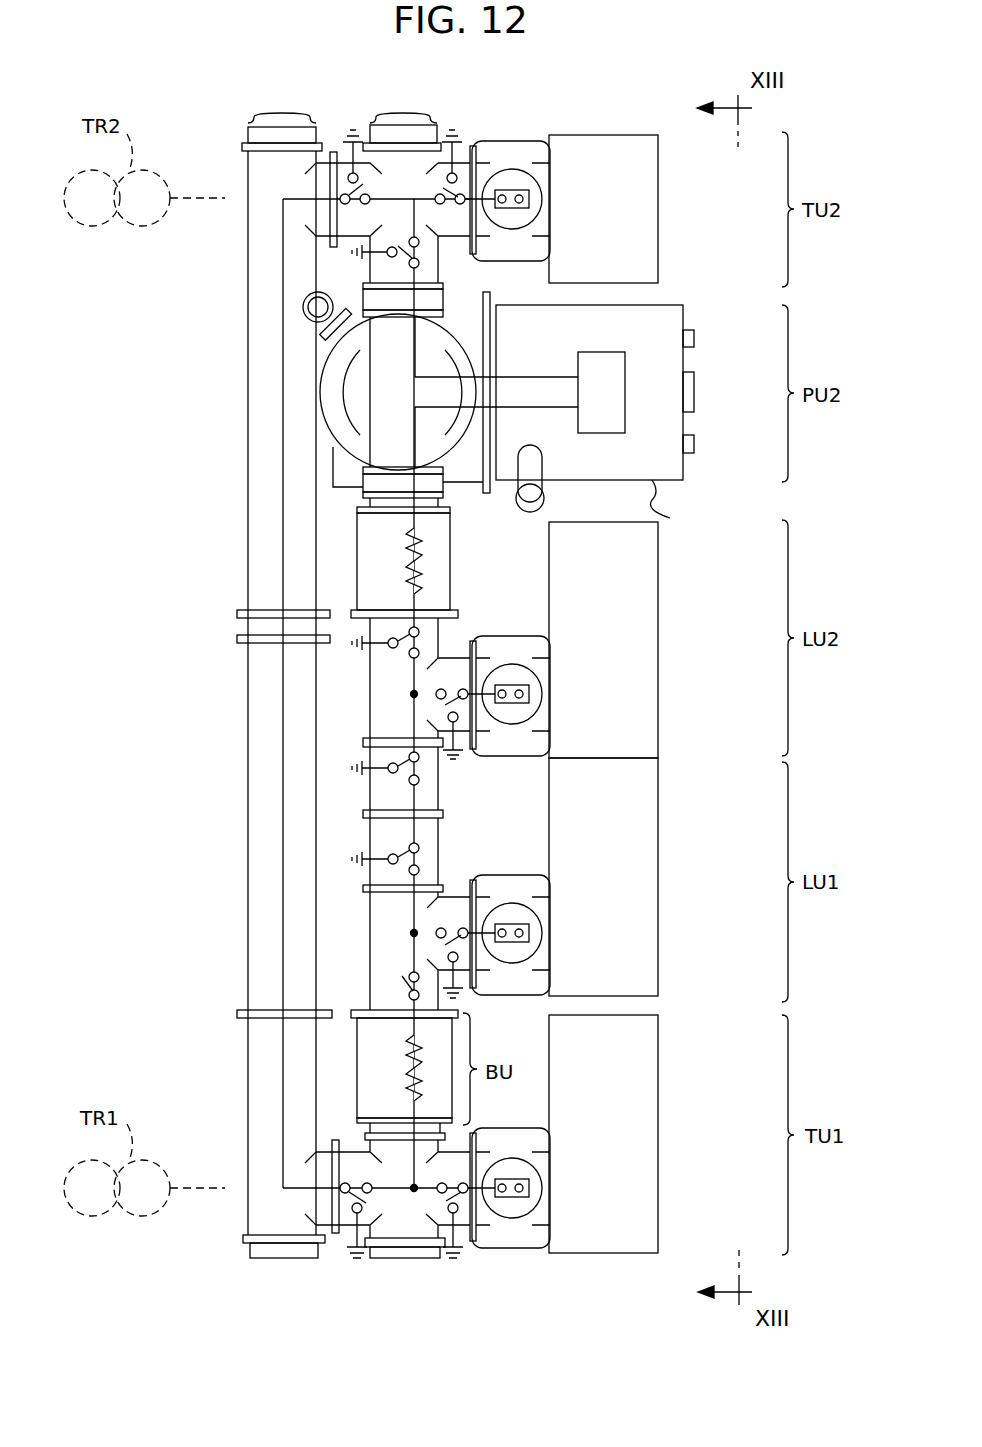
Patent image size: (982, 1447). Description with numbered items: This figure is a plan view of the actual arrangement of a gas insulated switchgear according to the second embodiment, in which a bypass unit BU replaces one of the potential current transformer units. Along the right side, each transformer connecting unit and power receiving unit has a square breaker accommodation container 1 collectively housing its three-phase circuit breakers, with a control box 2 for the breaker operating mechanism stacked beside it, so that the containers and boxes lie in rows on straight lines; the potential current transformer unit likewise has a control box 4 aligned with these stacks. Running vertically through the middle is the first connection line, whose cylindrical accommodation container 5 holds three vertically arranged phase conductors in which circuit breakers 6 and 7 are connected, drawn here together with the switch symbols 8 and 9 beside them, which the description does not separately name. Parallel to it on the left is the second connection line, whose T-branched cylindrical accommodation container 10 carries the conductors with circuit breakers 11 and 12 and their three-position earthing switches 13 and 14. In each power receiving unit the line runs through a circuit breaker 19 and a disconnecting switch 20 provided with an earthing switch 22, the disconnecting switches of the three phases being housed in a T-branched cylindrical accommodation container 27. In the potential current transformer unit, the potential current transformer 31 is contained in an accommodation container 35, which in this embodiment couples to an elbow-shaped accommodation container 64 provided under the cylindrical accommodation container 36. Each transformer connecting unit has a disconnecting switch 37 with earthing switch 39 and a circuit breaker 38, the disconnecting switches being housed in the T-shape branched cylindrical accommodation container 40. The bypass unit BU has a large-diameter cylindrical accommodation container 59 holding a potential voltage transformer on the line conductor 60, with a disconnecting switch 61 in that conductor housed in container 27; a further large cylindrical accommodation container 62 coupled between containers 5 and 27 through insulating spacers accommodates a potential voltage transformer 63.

The breaker accommodation container 1 is at (512, 140).
The control box 2 is at (603, 135).
The control box 4 is at (685, 358).
The cylindrical accommodation container 5 is at (370, 837).
The circuit breaker 6 is at (422, 860).
The circuit breaker 7 is at (417, 770).
The earthing switch 8 is at (356, 867).
The earthing switch 9 is at (360, 758).
The cylindrical accommodation container 10 is at (248, 313).
The circuit breaker 11 is at (348, 1202).
The circuit breaker 12 is at (348, 187).
The earthing switch 13 is at (358, 1263).
The earthing switch 14 is at (350, 133).
The circuit breaker 19 is at (529, 929).
The disconnecting switch 20 is at (453, 930).
The earthing switch 22 is at (458, 1000).
The T-branched cylindrical accommodation container 27 is at (370, 948).
The potential current transformer 31 is at (627, 368).
The accommodation container 35 is at (679, 507).
The cylindrical accommodation container 36 is at (370, 382).
The disconnecting switch 37 is at (457, 1200).
The circuit breaker 38 is at (529, 1187).
The earthing switch 39 is at (453, 1263).
The T-shape branched cylindrical accommodation container 40 is at (407, 1260).
The cylindrical accommodation container 59 is at (370, 1085).
The line conductor 60 is at (405, 1088).
The disconnecting switch 61 is at (402, 978).
The cylindrical accommodation container 62 is at (357, 545).
The potential voltage transformer 63 is at (430, 532).
The elbow-shaped accommodation container 64 is at (333, 447).